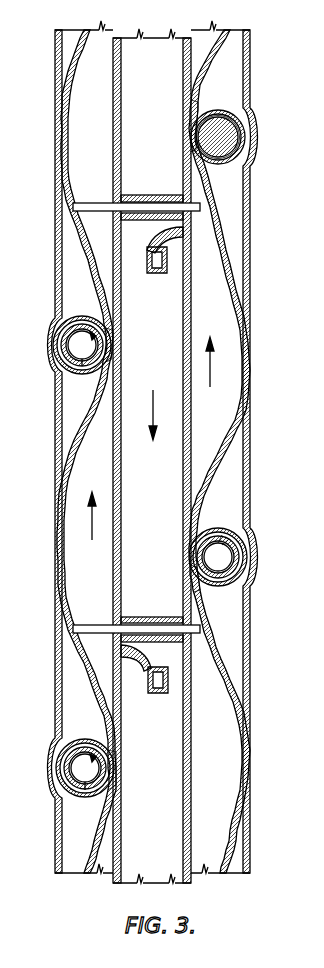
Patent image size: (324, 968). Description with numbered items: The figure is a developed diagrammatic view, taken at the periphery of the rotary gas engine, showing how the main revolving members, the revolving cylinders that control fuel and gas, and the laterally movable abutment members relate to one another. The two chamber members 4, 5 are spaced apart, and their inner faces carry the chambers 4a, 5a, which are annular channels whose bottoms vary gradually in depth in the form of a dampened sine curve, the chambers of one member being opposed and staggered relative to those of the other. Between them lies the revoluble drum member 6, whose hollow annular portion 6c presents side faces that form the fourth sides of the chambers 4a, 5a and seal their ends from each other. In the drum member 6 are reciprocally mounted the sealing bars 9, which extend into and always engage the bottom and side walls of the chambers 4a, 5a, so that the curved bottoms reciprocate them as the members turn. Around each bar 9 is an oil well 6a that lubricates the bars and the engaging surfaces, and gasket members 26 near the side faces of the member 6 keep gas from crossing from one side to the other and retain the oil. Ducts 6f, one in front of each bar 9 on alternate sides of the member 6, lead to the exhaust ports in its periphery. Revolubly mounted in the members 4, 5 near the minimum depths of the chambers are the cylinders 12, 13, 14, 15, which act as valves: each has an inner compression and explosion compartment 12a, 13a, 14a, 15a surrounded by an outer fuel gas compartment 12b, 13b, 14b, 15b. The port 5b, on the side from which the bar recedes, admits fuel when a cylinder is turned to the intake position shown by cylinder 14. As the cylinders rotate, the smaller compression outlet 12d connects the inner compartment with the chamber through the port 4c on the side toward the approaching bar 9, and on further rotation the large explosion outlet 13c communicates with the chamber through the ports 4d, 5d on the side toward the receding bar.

The chamber member 4 is at (55, 230).
The chamber 4a is at (72, 144).
The port 4c is at (112, 343).
The port 4d is at (106, 798).
The chamber member 5 is at (247, 302).
The chamber 5a is at (228, 340).
The port 5b is at (193, 152).
The port 5d is at (200, 585).
The drum member 6 is at (121, 497).
The oil well 6a is at (146, 198).
The hollow annular portion 6c is at (151, 440).
The duct 6f is at (150, 693).
The sealing bar 9 is at (93, 206).
The cylinder 12 is at (66, 365).
The compression and explosion compartment 12a is at (70, 352).
The fuel gas compartment 12b is at (62, 335).
The compression outlet 12d is at (95, 363).
The cylinder 13 is at (58, 780).
The compression and explosion compartment 13a is at (75, 768).
The fuel gas compartment 13b is at (65, 755).
The explosion outlet 13c is at (86, 795).
The cylinder 14 is at (247, 137).
The compression and explosion compartment 14a is at (237, 130).
The fuel gas compartment 14b is at (240, 112).
The cylinder 15 is at (250, 560).
The compression and explosion compartment 15a is at (232, 545).
The fuel gas compartment 15b is at (235, 528).
The gasket member 26 is at (200, 214).